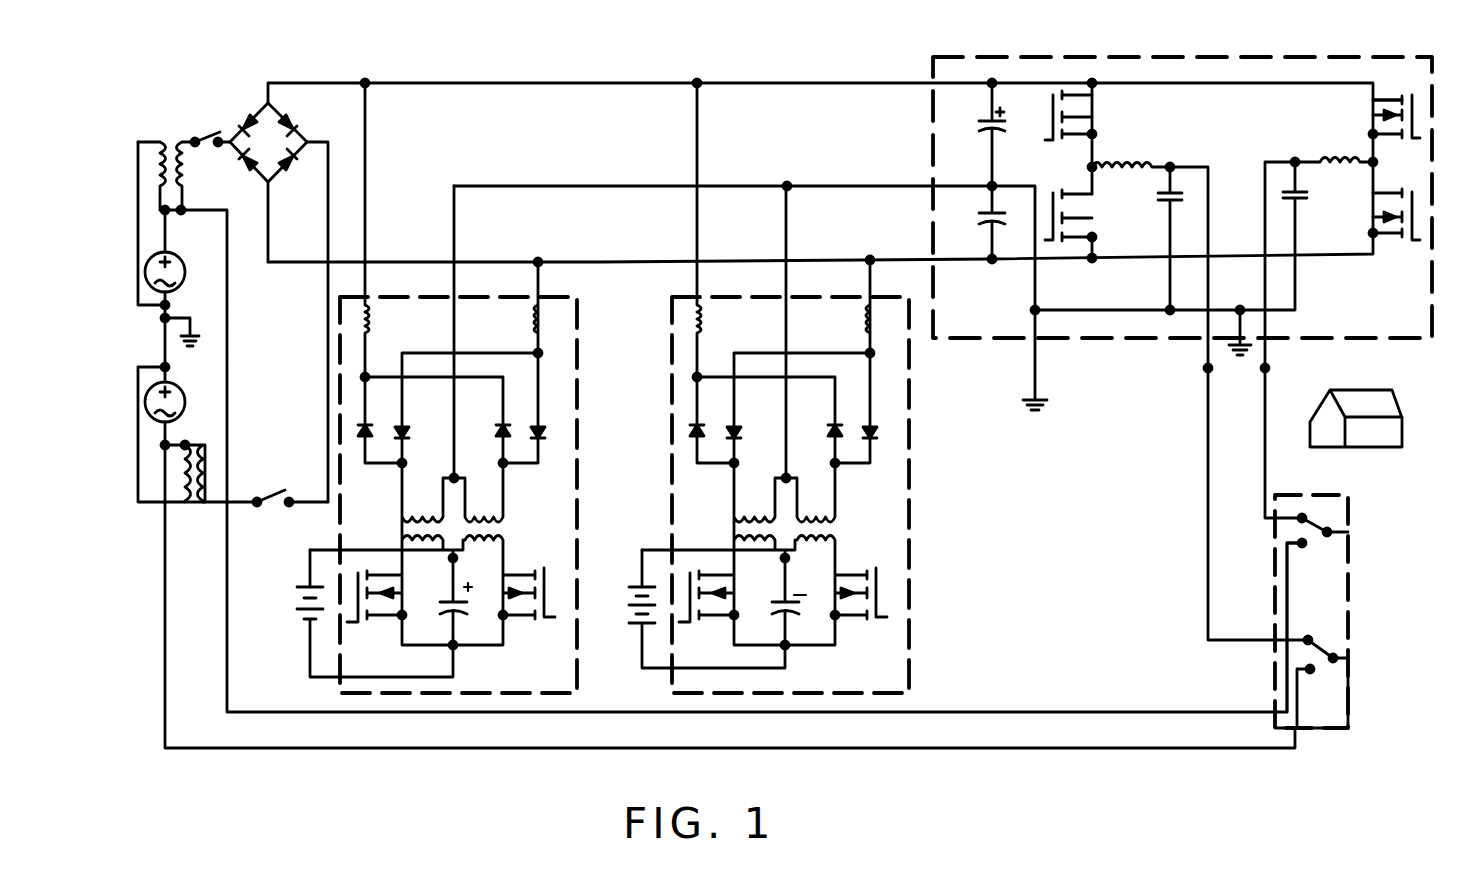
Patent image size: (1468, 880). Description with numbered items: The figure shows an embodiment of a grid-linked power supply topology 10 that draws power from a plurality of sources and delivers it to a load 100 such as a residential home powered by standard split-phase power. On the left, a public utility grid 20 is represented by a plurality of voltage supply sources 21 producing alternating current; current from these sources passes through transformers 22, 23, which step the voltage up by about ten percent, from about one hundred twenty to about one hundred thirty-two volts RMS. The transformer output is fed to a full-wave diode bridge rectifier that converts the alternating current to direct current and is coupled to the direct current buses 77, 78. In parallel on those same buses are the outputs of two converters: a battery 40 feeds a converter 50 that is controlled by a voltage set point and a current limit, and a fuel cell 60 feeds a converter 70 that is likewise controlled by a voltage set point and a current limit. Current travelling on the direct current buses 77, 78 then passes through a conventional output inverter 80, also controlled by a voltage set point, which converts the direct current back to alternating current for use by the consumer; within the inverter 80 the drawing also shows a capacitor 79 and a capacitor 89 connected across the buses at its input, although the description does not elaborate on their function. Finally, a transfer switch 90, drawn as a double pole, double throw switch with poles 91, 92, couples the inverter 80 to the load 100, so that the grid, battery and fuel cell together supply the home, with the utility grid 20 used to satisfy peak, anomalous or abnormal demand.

The grid-linked power supply topology 10 is at (234, 102).
The public utility grid 20 is at (236, 323).
The voltage supply sources 21 is at (187, 400).
The transformer 22 is at (168, 140).
The transformer 23 is at (189, 505).
The battery 40 is at (636, 644).
The battery converter 50 is at (794, 388).
The fuel cell 60 is at (301, 646).
The fuel cell converter 70 is at (432, 439).
The direct current bus 77 is at (365, 152).
The direct current bus 78 is at (588, 260).
The capacitor 79 is at (975, 134).
The output inverter 80 is at (1182, 348).
The capacitor 89 is at (973, 222).
The transfer switch 90 is at (1311, 663).
The transfer switch pole 91 is at (1312, 537).
The transfer switch pole 92 is at (1323, 643).
The load 100 is at (1364, 392).